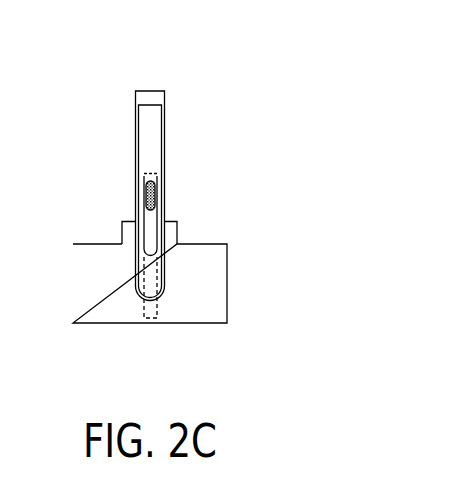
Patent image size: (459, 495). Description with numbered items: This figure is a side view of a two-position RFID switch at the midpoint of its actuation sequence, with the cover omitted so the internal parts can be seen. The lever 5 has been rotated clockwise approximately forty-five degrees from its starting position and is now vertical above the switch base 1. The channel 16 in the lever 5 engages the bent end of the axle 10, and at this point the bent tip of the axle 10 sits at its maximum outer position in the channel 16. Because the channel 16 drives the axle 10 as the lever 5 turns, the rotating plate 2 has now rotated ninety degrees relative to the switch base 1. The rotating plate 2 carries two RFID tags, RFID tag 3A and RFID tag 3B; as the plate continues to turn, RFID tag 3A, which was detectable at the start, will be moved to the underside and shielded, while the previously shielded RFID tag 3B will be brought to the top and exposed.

The switch base 1 is at (150, 323).
The rotating plate 2 is at (155, 307).
The RFID tag 3A is at (178, 238).
The RFID tag 3B is at (122, 240).
The lever 5 is at (136, 127).
The axle 10 is at (147, 188).
The channel 16 is at (142, 216).